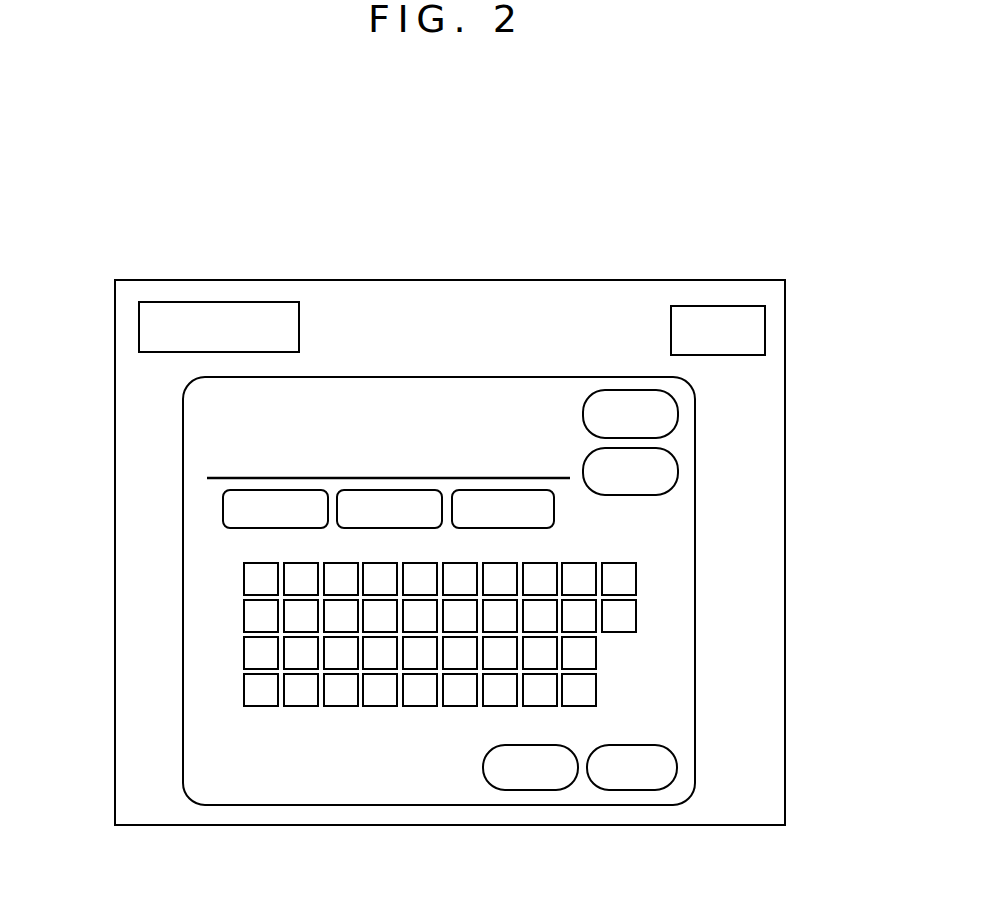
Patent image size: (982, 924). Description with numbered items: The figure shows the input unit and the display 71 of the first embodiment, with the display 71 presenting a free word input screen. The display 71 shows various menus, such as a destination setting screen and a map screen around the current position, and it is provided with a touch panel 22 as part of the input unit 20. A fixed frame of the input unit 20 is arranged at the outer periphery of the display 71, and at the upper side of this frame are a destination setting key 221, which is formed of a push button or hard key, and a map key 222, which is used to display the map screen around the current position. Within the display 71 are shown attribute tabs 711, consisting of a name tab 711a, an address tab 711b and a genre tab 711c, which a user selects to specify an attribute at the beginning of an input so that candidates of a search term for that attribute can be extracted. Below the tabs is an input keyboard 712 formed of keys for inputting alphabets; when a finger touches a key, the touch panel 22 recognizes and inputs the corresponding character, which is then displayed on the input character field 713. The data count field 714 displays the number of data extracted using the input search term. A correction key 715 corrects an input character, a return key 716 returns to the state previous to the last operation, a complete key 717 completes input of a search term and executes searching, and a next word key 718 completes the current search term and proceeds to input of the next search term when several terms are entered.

The input unit 20 is at (460, 508).
The touch panel 22 is at (748, 282).
The destination setting key 221 is at (162, 302).
The map key 222 is at (690, 306).
The display 71 is at (444, 518).
The attribute tabs 711 is at (293, 338).
The name tab 711a is at (305, 490).
The address tab 711b is at (390, 490).
The genre tab 711c is at (472, 490).
The input keyboard 712 is at (647, 563).
The input character field 713 is at (213, 463).
The data count field 714 is at (528, 410).
The correction key 715 is at (678, 470).
The return key 716 is at (678, 412).
The complete key 717 is at (628, 790).
The next word key 718 is at (540, 790).